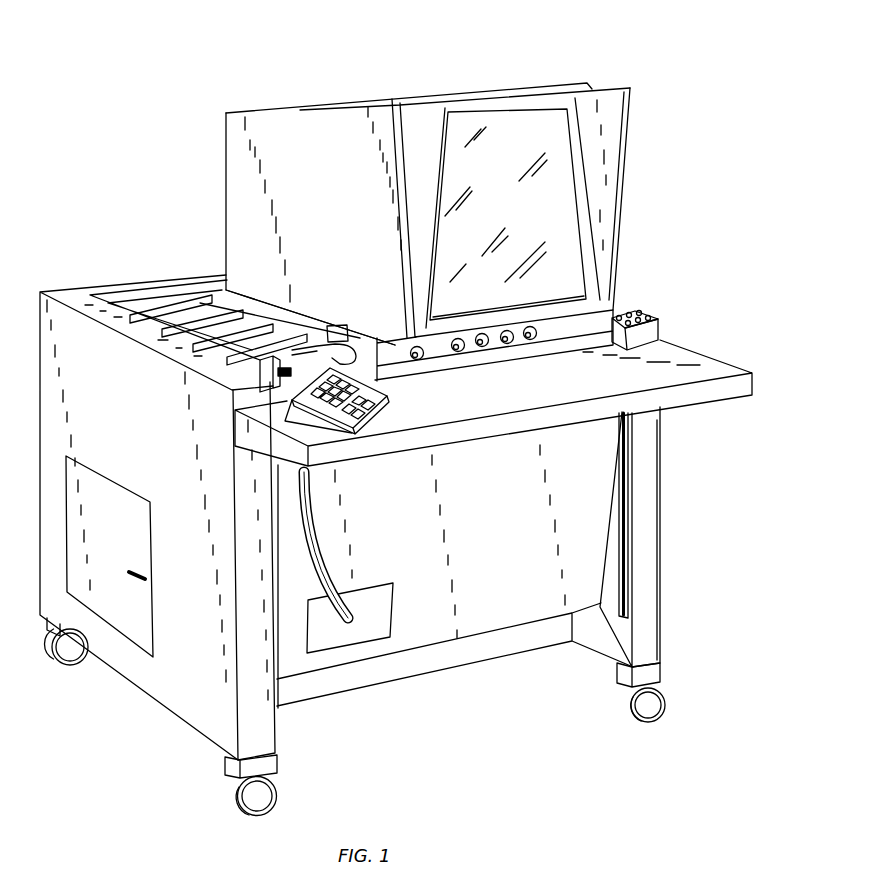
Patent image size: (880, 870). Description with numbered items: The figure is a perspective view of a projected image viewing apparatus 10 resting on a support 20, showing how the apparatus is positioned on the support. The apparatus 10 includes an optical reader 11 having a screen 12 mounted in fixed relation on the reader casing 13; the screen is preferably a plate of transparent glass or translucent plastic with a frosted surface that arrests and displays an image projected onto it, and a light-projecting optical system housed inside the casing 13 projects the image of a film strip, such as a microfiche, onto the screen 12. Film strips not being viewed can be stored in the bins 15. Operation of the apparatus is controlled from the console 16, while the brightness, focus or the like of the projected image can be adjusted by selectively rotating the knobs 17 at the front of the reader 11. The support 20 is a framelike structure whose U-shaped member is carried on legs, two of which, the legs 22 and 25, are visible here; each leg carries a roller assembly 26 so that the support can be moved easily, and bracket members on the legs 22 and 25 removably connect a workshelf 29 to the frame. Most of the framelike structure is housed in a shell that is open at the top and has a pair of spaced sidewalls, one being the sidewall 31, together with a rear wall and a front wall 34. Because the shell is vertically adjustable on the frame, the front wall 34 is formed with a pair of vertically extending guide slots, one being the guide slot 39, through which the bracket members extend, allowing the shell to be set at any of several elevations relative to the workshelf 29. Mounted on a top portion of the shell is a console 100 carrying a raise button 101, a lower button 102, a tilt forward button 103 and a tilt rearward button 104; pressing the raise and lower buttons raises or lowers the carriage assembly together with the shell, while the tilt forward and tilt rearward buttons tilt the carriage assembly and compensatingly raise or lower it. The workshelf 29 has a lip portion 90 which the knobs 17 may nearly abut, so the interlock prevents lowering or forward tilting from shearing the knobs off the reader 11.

The projected image viewing apparatus 10 is at (190, 204).
The optical reader 11 is at (392, 177).
The screen 12 is at (500, 186).
The reader casing 13 is at (230, 133).
The bins 15 is at (163, 310).
The console 16 is at (382, 409).
The knobs 17 is at (456, 352).
The support 20 is at (678, 483).
The leg 22 is at (270, 765).
The leg 25 is at (647, 677).
The roller assembly 26 is at (252, 793).
The workshelf 29 is at (498, 352).
The sidewall 31 is at (117, 422).
The front wall 34 is at (495, 507).
The guide slot 39 is at (627, 584).
The lip portion 90 is at (494, 360).
The console 100 is at (668, 294).
The raise button 101 is at (617, 316).
The lower button 102 is at (631, 313).
The tilt forward button 103 is at (643, 316).
The tilt rearward button 104 is at (648, 331).